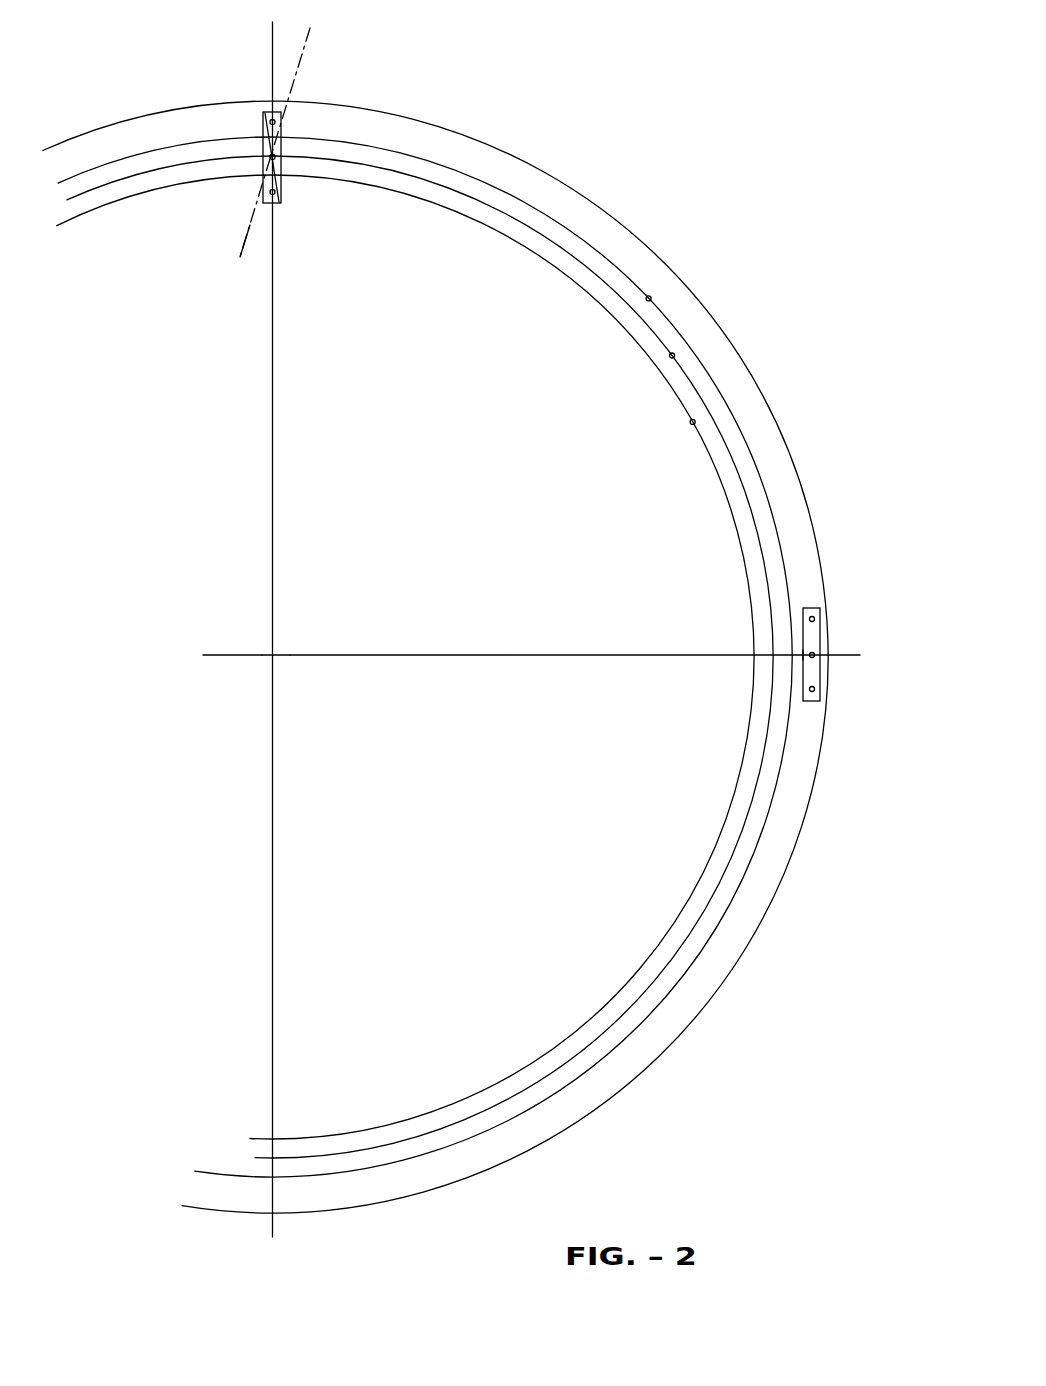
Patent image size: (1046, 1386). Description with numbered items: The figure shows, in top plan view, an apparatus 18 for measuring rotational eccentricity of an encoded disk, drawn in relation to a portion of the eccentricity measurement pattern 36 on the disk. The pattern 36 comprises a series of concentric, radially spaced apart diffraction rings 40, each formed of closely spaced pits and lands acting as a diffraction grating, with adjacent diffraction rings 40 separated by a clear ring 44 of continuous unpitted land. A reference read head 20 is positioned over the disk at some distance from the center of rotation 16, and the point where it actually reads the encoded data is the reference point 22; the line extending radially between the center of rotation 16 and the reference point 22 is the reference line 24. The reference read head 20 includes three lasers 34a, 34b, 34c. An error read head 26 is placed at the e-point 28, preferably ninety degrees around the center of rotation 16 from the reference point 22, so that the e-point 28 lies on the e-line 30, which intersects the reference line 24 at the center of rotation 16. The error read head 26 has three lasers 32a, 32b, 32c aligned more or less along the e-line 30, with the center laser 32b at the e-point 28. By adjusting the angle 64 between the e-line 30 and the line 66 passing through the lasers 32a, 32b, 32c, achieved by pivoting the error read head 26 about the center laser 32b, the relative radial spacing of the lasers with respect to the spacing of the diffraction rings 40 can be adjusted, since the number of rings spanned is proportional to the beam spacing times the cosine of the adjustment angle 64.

The center of rotation 16 is at (272, 658).
The apparatus 18 is at (435, 618).
The reference read head 20 is at (820, 608).
The reference point 22 is at (817, 657).
The reference line 24 is at (510, 655).
The error read head 26 is at (263, 112).
The e-point 28 is at (265, 155).
The e-line 30 is at (273, 507).
The laser 32a is at (273, 121).
The center laser 32b is at (274, 160).
The laser 32c is at (274, 196).
The laser 34a is at (812, 619).
The laser 34b is at (812, 655).
The laser 34c is at (812, 689).
The eccentricity measurement pattern 36 is at (573, 280).
The diffraction ring 40 is at (650, 297).
The clear ring 44 is at (662, 327).
The adjustment angle 64 is at (228, 54).
The line passing through the three lasers 66 is at (247, 238).